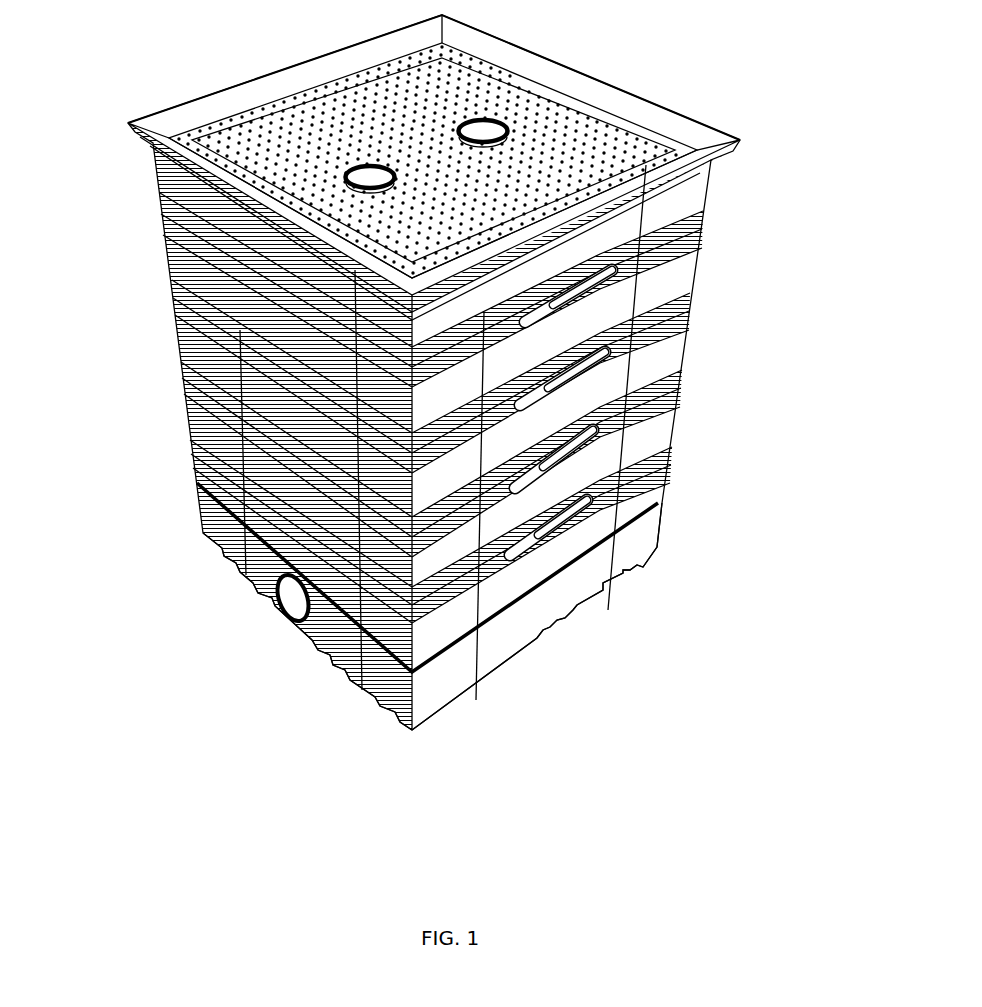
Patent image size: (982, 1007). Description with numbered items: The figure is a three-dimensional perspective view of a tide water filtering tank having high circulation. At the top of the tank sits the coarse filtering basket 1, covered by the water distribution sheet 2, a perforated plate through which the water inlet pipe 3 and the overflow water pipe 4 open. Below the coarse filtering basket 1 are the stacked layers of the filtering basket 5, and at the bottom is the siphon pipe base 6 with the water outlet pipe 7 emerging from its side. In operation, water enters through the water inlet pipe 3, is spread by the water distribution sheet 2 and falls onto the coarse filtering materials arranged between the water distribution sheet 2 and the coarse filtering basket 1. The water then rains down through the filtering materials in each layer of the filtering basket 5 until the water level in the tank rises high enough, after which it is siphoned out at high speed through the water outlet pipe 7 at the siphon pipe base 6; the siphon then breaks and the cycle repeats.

The coarse filtering basket 1 is at (698, 190).
The water distribution sheet 2 is at (595, 152).
The water inlet pipe 3 is at (503, 145).
The overflow water pipe 4 is at (350, 192).
The filtering basket 5 is at (228, 300).
The siphon pipe base 6 is at (227, 535).
The water outlet pipe 7 is at (290, 617).